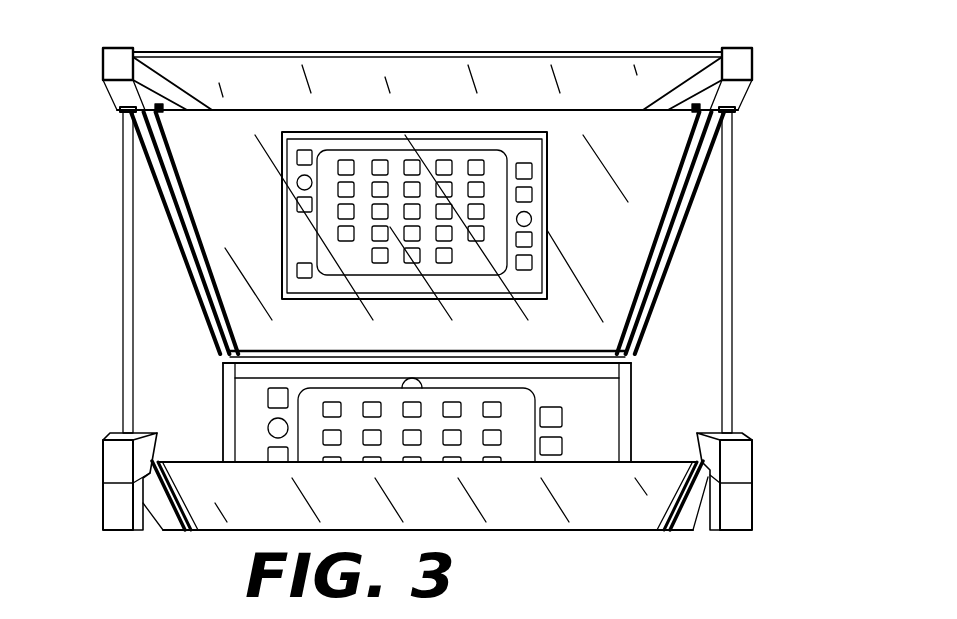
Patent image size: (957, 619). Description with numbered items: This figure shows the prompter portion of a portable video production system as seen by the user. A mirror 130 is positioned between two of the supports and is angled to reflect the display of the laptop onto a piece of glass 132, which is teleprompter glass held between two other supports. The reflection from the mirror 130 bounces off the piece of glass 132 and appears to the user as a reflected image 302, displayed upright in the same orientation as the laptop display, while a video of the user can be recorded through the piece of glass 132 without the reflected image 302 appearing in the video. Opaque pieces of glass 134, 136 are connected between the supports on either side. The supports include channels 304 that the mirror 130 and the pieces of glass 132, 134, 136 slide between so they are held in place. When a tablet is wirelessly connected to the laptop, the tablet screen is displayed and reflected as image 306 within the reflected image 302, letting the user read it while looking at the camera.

The mirror 130 is at (602, 513).
The piece of glass 132 is at (583, 112).
The piece of glass 134 is at (123, 272).
The piece of glass 136 is at (732, 272).
The reflected image 302 is at (363, 133).
The channels 304 is at (163, 125).
The image 306 is at (468, 155).